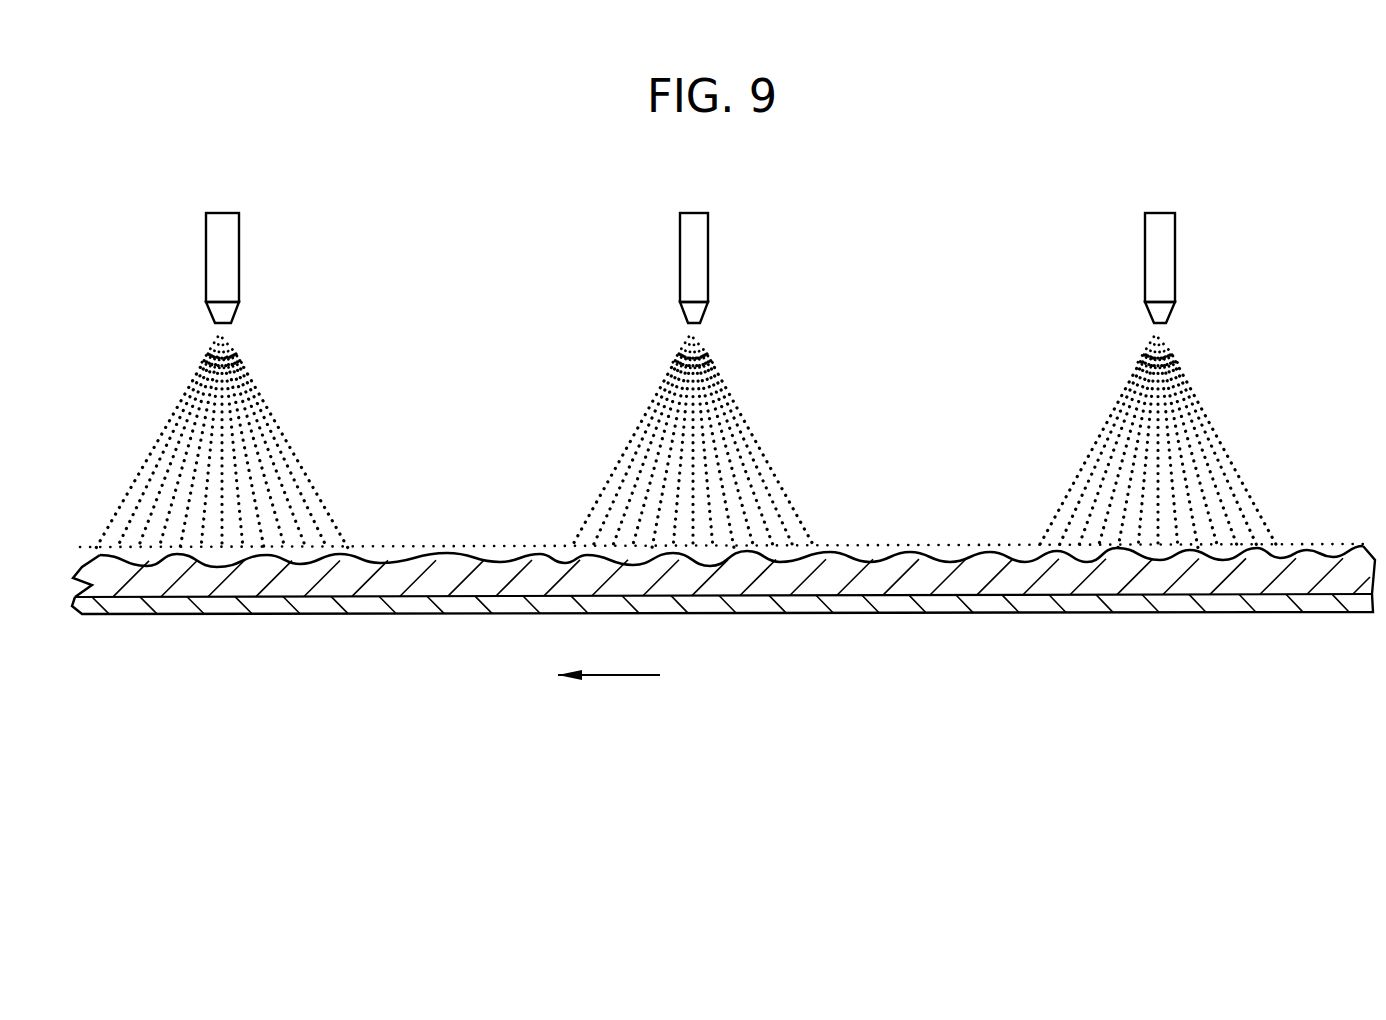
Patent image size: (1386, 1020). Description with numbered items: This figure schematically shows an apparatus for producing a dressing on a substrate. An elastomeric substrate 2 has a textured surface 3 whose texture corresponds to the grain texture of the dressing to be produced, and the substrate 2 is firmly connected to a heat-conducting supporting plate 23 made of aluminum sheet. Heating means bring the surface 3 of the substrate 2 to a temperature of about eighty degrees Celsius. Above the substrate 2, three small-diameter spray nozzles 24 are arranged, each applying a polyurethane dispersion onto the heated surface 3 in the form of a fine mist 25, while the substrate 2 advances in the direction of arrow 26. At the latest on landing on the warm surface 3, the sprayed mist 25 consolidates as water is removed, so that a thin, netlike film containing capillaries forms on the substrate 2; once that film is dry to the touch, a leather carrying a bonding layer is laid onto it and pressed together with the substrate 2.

The elastomeric substrate 2 is at (355, 580).
The textured surface 3 is at (404, 556).
The heat-conducting supporting plate 23 is at (927, 606).
The spray nozzles 24 is at (1223, 243).
The fine mist 25 is at (1297, 423).
The arrow 26 is at (610, 675).